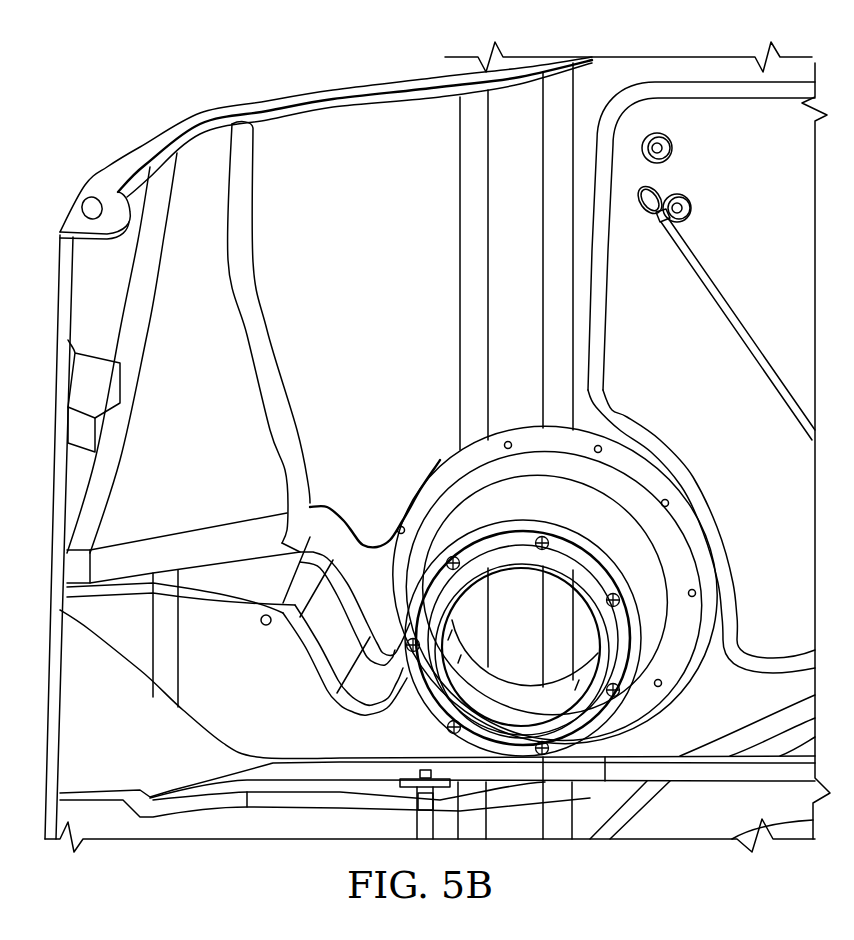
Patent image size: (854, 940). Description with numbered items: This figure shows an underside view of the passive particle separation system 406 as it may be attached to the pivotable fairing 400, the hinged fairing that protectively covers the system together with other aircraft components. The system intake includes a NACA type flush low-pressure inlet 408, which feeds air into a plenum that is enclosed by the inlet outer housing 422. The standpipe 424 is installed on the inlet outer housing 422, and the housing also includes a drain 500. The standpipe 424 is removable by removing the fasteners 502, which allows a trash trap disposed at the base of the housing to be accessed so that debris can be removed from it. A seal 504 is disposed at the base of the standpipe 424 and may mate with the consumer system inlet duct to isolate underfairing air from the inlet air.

The pivotable fairing 400 is at (360, 127).
The passive particle separation system 406 is at (428, 438).
The NACA type flush low-pressure inlet 408 is at (252, 452).
The inlet outer housing 422 is at (614, 493).
The standpipe 424 is at (520, 707).
The drain 500 is at (266, 626).
The fasteners 502 is at (440, 717).
The seal 504 is at (605, 662).